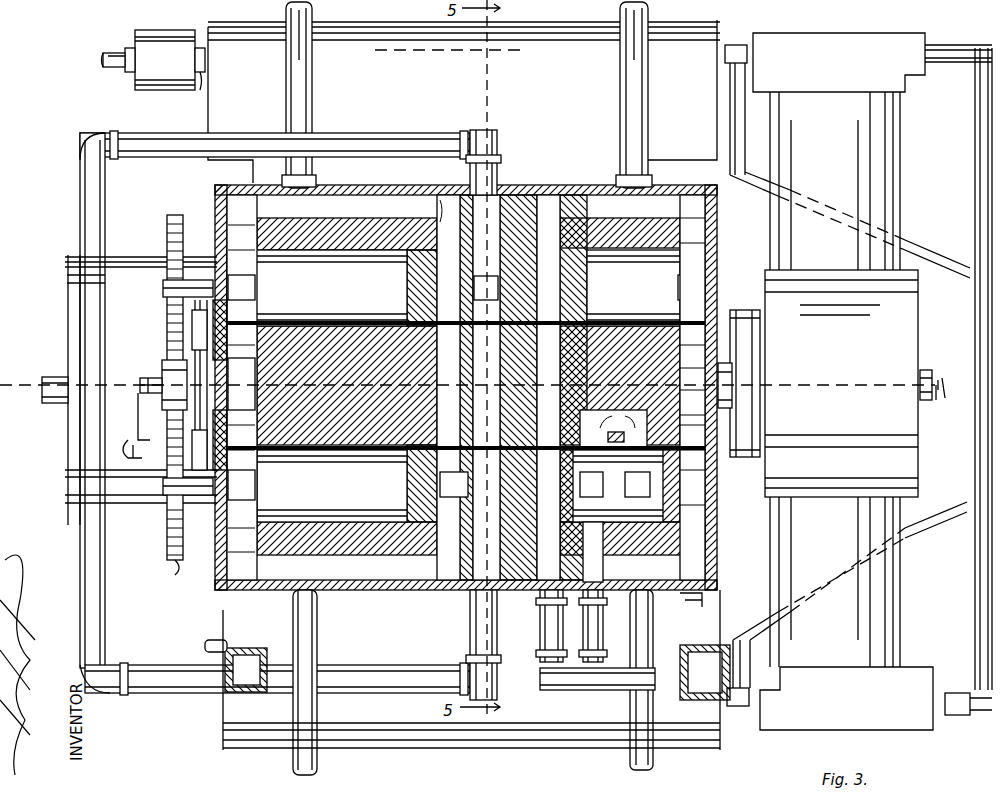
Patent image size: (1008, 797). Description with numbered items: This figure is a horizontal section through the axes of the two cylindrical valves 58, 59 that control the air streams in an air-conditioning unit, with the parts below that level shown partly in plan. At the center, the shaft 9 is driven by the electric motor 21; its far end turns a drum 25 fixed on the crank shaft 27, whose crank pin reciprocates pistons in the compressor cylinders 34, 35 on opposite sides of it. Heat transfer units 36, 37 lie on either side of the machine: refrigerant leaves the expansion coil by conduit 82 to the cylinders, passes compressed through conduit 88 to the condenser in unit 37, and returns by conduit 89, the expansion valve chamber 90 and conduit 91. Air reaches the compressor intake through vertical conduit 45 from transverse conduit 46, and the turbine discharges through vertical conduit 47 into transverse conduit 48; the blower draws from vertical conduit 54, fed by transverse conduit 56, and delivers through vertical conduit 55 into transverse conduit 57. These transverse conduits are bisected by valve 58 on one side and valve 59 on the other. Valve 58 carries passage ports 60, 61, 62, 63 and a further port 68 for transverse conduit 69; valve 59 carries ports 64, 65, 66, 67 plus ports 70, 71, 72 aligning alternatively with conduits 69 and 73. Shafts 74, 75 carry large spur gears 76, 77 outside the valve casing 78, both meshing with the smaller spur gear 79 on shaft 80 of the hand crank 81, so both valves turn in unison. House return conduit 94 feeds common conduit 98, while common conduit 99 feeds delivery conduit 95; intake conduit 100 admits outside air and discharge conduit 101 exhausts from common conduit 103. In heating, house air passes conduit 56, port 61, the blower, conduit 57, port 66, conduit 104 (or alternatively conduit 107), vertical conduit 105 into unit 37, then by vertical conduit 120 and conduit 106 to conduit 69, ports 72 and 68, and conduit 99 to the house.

The shaft 9 is at (732, 362).
The electric motor 21 is at (125, 257).
The drum 25 is at (734, 310).
The crank shaft 27 is at (926, 370).
The compressor cylinder 34 is at (905, 592).
The compressor cylinder 35 is at (905, 160).
The heat transfer unit 36 is at (472, 27).
The heat transfer unit 37 is at (468, 748).
The vertical conduit 45 is at (241, 386).
The transverse conduit 46 is at (241, 388).
The vertical conduit 47 is at (692, 402).
The transverse conduit 48 is at (729, 538).
The vertical conduit 54 is at (449, 408).
The vertical conduit 55 is at (486, 408).
The transverse conduit 56 is at (435, 387).
The transverse conduit 57 is at (486, 387).
The cylindrical valve 58 is at (317, 288).
The cylindrical valve 59 is at (332, 486).
The passage port 60 is at (241, 287).
The passage port 61 is at (432, 288).
The passage port 62 is at (486, 288).
The passage port 63 is at (646, 288).
The passage port 64 is at (241, 485).
The passage port 65 is at (454, 484).
The passage port 66 is at (486, 485).
The passage port 67 is at (692, 487).
The passage port 68 is at (527, 387).
The transverse conduit 69 is at (548, 387).
The passage port 70 is at (591, 484).
The passage port 71 is at (637, 484).
The passage port 72 is at (547, 485).
The transverse conduit 73 is at (680, 578).
The shaft 74 is at (165, 297).
The shaft 75 is at (165, 495).
The large spur gear 76 is at (175, 215).
The large spur gear 77 is at (176, 573).
The valve casing 78 is at (519, 187).
The spur gear 79 is at (162, 362).
The shaft 80 is at (141, 376).
The hand crank 81 is at (136, 427).
The conduit 82 is at (735, 45).
The conduit 88 is at (975, 112).
The conduit 89 is at (112, 52).
The expansion valve chamber 90 is at (158, 40).
The conduit 91 is at (200, 78).
The house return conduit 94 is at (312, 72).
The house delivery conduit 95 is at (648, 82).
The common conduit 98 is at (347, 224).
The common conduit 99 is at (620, 223).
The atmospheric air intake conduit 100 is at (317, 760).
The atmospheric air discharge conduit 101 is at (653, 762).
The common conduit 103 is at (686, 596).
The conduit 104 is at (470, 626).
The vertical conduit 105 is at (240, 690).
The conduit 106 is at (565, 686).
The conduit 107 is at (370, 133).
The vertical conduit 120 is at (705, 672).